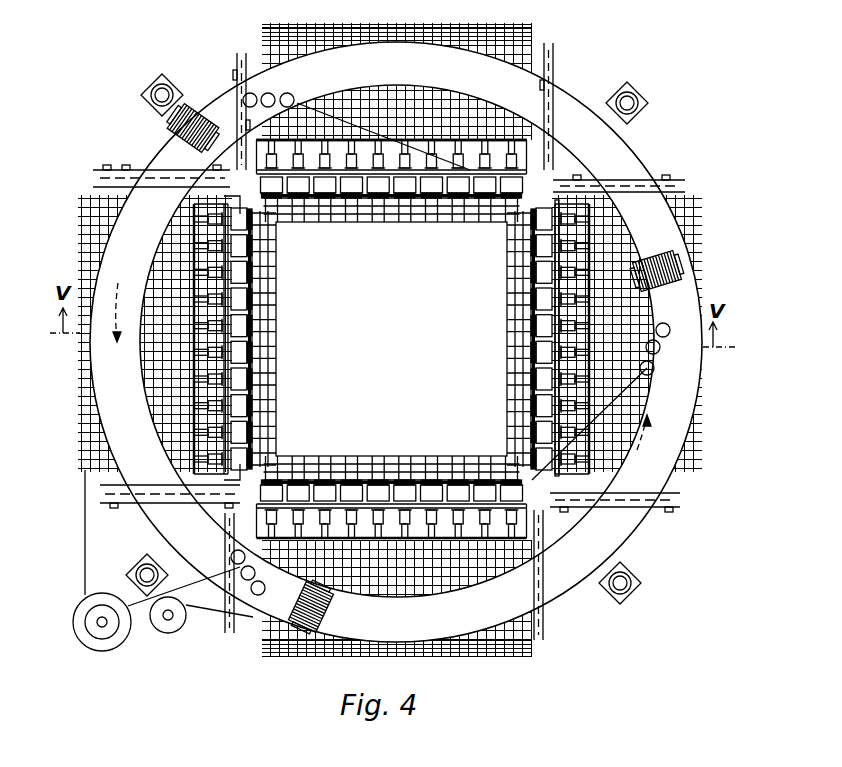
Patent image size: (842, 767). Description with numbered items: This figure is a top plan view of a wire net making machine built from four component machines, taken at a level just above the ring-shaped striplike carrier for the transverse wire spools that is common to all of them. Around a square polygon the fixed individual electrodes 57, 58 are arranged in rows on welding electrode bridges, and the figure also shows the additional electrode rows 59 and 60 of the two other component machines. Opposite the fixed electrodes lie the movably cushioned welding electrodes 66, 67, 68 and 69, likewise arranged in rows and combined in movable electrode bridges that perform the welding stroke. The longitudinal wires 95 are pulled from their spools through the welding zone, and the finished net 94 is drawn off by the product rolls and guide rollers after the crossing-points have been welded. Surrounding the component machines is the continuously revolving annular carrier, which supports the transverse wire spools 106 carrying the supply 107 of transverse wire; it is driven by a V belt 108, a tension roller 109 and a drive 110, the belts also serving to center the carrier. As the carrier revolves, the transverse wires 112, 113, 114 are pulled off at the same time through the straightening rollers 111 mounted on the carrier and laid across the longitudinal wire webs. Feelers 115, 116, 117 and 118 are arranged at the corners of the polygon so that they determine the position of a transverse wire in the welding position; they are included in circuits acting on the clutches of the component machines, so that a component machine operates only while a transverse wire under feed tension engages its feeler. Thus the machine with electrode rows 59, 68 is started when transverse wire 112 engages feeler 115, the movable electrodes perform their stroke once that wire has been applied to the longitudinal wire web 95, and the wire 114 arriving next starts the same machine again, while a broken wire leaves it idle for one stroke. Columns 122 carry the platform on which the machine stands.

The individual electrode 57 is at (267, 323).
The individual electrode 58 is at (516, 323).
The electrode row 59 is at (407, 218).
The electrode row 60 is at (388, 463).
The movable welding electrode 66 is at (233, 407).
The movable welding electrode 67 is at (537, 413).
The movable welding electrode 68 is at (472, 190).
The movable welding electrode 69 is at (480, 493).
The finished net 94 is at (473, 118).
The longitudinal wires 95 is at (322, 188).
The transverse wire spool 106 is at (200, 108).
The supply of transverse wire 107 is at (184, 142).
The V belt 108 is at (85, 548).
The tension roller 109 is at (172, 633).
The drive 110 is at (85, 651).
The straightening rollers 111 is at (287, 93).
The transverse wire 112 is at (352, 123).
The transverse wire 113 is at (233, 498).
The transverse wire 114 is at (553, 440).
The feeler 115 is at (535, 170).
The feeler 116 is at (232, 202).
The feeler 117 is at (240, 464).
The feeler 118 is at (520, 493).
The columns 122 is at (157, 77).